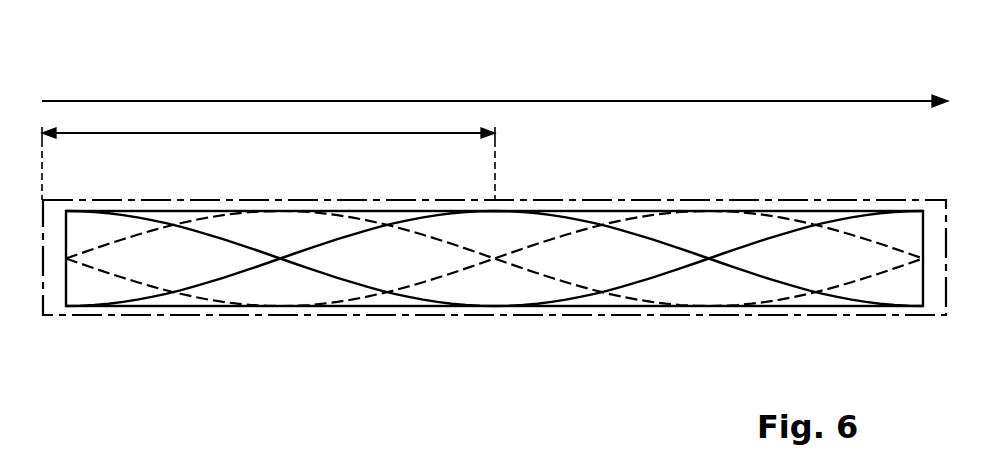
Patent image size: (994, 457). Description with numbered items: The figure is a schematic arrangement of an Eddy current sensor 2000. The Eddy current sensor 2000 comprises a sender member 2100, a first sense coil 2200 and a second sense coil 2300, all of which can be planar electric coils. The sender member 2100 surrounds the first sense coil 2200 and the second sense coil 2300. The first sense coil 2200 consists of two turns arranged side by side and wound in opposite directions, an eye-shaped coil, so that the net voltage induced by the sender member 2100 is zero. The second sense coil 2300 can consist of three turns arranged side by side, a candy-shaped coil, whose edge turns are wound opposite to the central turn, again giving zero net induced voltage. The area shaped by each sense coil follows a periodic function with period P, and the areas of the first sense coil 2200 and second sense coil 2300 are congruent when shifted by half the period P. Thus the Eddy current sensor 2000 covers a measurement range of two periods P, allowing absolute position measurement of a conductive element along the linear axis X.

The Eddy current sensor 2000 is at (139, 55).
The sender member 2100 is at (270, 201).
The first sense coil 2200 is at (272, 307).
The second sense coil 2300 is at (560, 210).